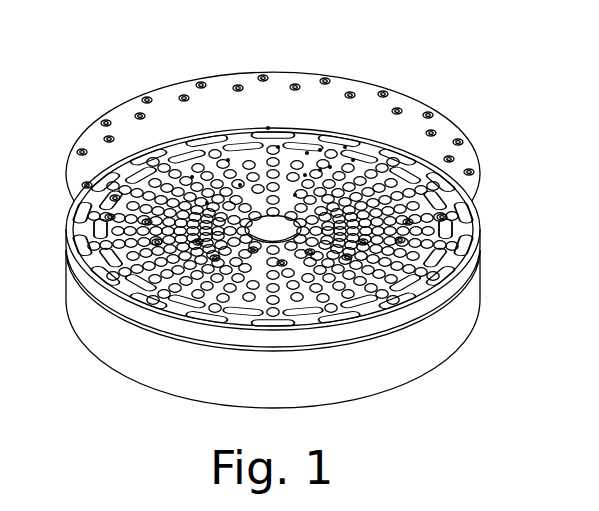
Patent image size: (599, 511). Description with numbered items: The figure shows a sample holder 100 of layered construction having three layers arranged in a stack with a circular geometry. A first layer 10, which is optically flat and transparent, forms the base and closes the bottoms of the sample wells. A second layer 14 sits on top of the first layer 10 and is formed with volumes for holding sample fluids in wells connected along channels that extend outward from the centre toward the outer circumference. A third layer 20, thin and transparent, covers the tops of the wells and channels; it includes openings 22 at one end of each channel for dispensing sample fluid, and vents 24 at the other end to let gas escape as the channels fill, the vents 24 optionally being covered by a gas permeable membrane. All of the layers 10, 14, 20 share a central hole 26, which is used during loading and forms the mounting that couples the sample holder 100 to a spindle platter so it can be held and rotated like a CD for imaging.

The sample holder 100 is at (508, 100).
The first layer 10 is at (82, 335).
The second layer 14 is at (66, 249).
The third layer 20 is at (83, 131).
The openings 22 is at (323, 140).
The vents 24 is at (293, 84).
The central hole 26 is at (255, 165).